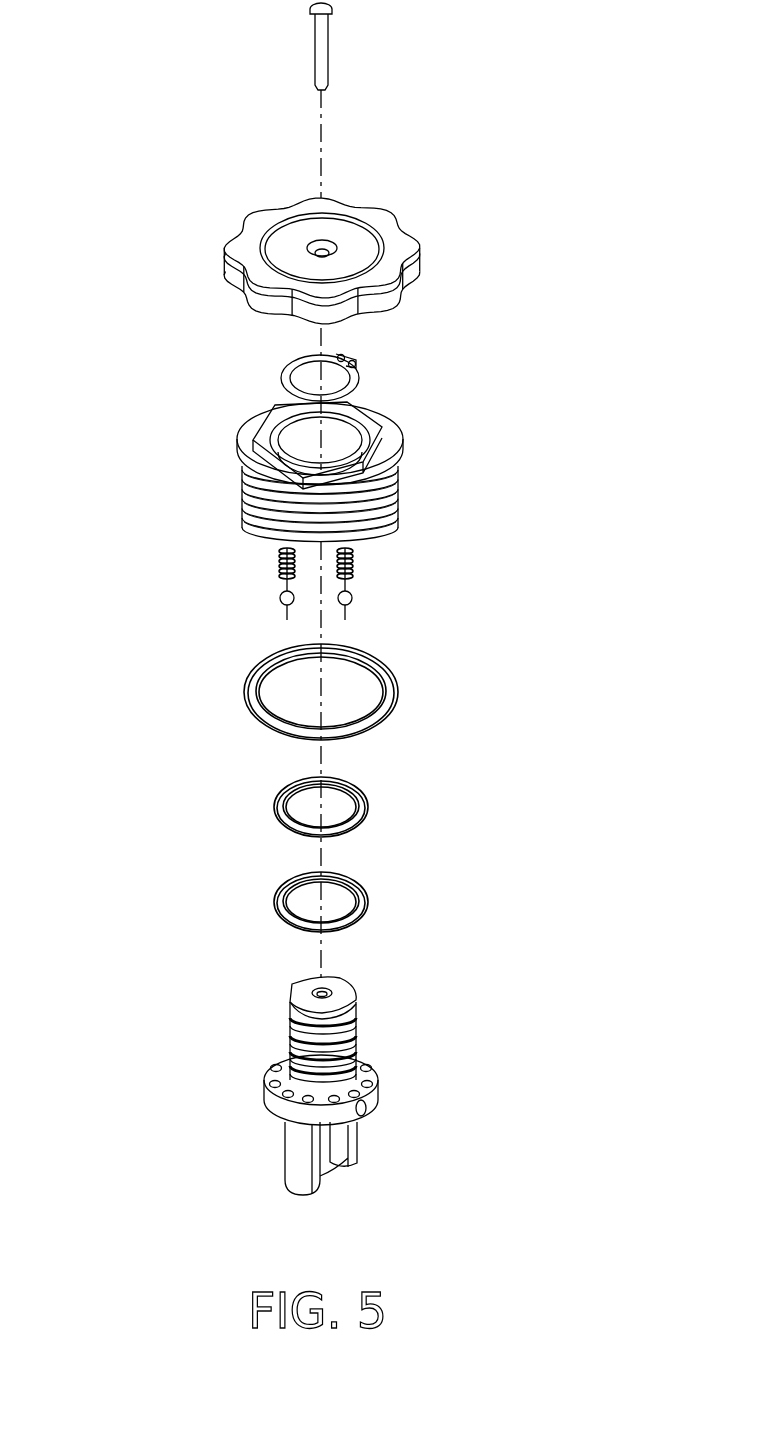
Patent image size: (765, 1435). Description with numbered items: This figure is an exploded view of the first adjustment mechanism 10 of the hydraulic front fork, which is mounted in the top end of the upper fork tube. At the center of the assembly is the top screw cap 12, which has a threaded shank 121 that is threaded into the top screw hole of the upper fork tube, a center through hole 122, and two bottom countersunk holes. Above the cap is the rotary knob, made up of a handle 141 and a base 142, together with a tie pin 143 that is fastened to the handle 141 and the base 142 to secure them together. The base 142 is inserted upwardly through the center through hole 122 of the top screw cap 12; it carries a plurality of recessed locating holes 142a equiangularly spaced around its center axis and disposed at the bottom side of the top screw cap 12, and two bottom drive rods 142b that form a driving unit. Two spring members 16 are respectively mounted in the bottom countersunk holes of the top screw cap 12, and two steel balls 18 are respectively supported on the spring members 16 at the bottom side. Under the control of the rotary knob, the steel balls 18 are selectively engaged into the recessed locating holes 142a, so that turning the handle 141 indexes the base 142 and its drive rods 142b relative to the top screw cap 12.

The first adjustment mechanism 10 is at (471, 219).
The top screw cap 12 is at (332, 460).
The threaded shank 121 is at (242, 498).
The center through hole 122 is at (303, 442).
The spring members 16 is at (278, 565).
The steel balls 18 is at (281, 602).
The handle 141 is at (243, 213).
The base 142 is at (312, 1086).
The recessed locating holes 142a is at (370, 1060).
The bottom drive rods 142b is at (293, 1152).
The tie pin 143 is at (330, 54).